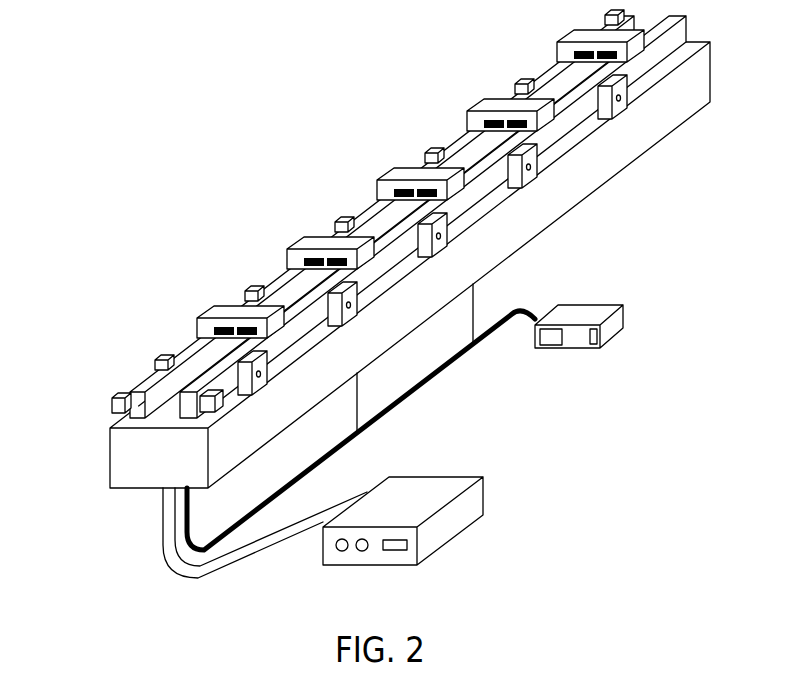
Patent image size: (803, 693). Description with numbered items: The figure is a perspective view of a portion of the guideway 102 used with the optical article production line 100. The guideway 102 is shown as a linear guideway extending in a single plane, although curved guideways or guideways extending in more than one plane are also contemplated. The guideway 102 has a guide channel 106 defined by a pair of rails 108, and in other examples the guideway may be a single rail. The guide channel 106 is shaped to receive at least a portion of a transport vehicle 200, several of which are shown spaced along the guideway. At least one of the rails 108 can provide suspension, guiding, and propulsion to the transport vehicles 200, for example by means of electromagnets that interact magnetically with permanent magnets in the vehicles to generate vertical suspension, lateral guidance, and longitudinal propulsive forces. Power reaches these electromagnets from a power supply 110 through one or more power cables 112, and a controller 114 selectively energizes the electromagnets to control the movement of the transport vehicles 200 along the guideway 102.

The production line 100 is at (309, 89).
The guideway 102 is at (123, 457).
The guide channel 106 is at (163, 412).
The rails 108 is at (168, 358).
The power supply 110 is at (597, 306).
The power cables 112 is at (525, 300).
The controller 114 is at (434, 477).
The transport vehicle 200 is at (417, 173).